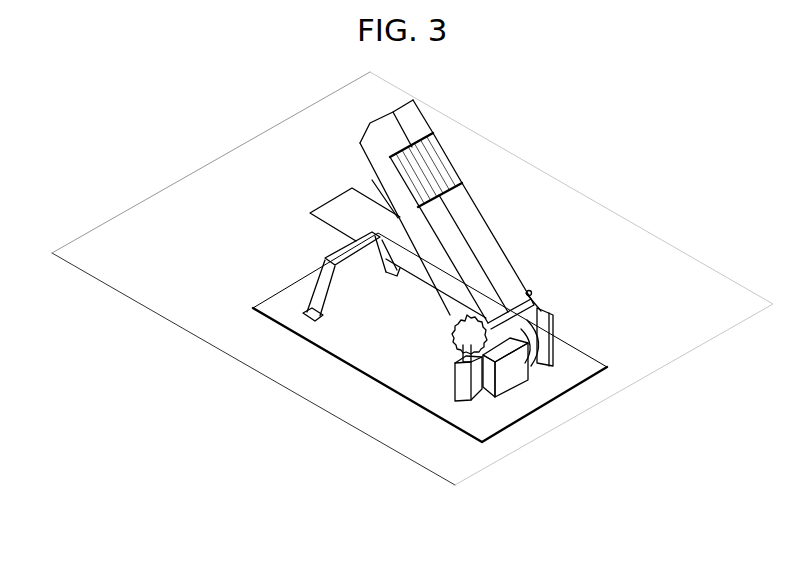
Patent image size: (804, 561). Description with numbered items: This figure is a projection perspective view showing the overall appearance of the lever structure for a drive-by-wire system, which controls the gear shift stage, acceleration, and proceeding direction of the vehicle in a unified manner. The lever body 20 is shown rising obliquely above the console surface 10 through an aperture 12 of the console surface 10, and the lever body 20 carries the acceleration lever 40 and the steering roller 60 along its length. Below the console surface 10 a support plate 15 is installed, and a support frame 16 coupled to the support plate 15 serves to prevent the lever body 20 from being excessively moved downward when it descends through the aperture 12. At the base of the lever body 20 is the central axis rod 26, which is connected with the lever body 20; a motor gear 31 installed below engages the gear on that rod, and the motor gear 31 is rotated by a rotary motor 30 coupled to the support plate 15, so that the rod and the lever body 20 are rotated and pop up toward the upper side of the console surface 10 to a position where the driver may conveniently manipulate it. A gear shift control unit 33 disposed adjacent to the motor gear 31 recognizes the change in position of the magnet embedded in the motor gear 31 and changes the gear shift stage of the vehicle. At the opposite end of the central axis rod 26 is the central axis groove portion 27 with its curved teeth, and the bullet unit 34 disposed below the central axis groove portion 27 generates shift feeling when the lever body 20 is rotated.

The console surface 10 is at (400, 278).
The aperture 12 is at (345, 219).
The support plate 15 is at (417, 339).
The support frame 16 is at (277, 307).
The lever body 20 is at (430, 205).
The central axis rod 26 is at (504, 431).
The central axis groove portion 27 is at (406, 388).
The rotary motor 30 is at (557, 426).
The motor gear 31 is at (589, 386).
The gear shift control unit 33 is at (640, 344).
The bullet unit 34 is at (435, 441).
The acceleration lever 40 is at (317, 149).
The steering roller 60 is at (472, 145).